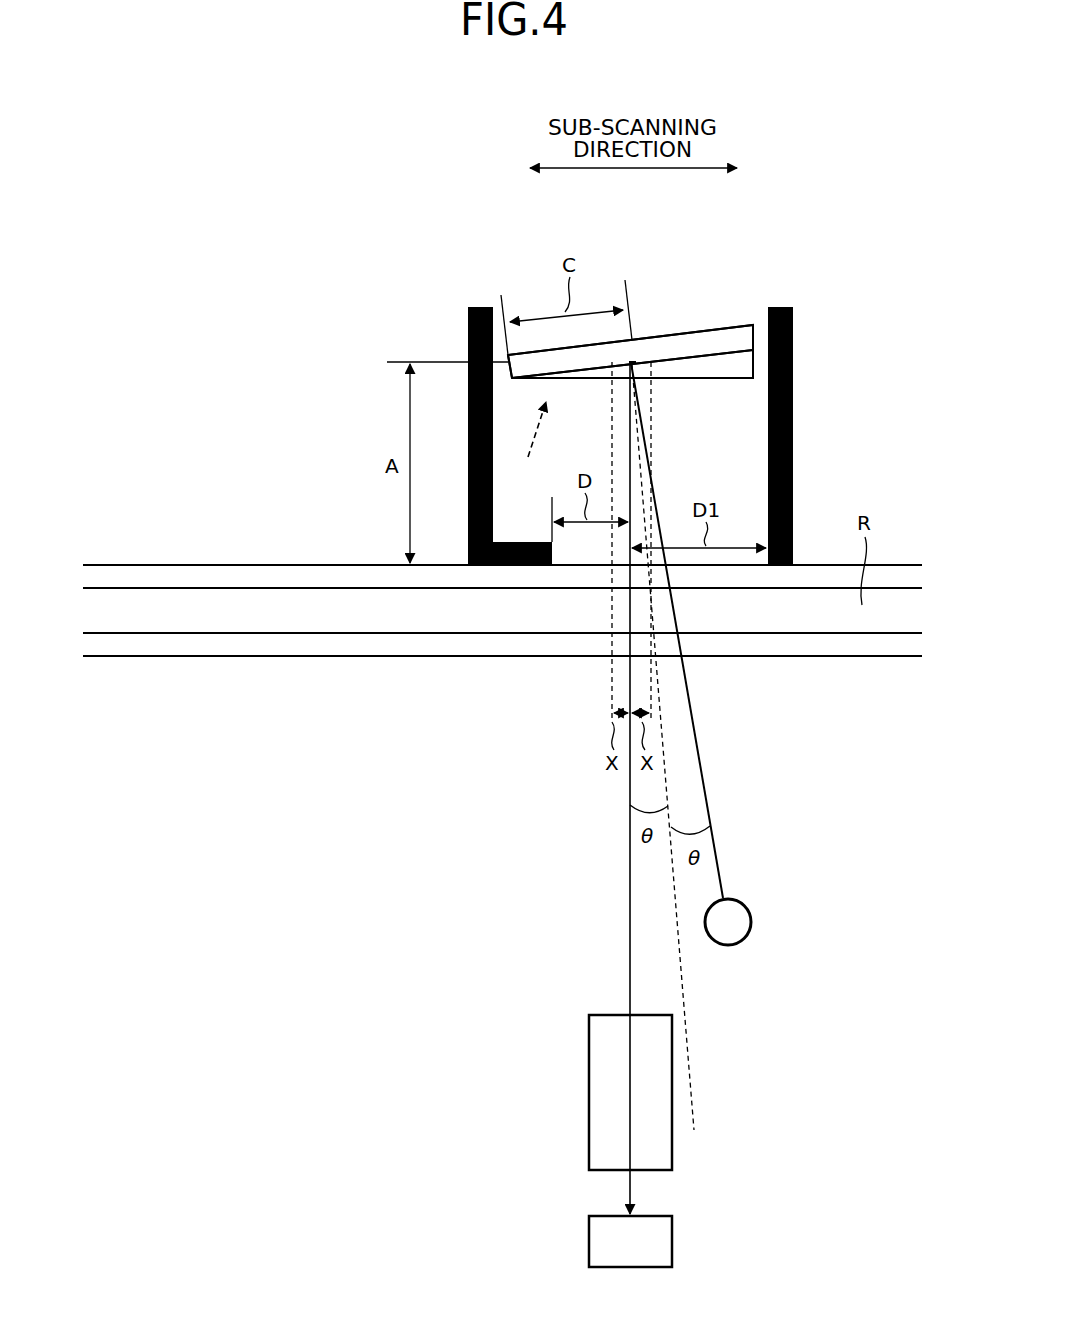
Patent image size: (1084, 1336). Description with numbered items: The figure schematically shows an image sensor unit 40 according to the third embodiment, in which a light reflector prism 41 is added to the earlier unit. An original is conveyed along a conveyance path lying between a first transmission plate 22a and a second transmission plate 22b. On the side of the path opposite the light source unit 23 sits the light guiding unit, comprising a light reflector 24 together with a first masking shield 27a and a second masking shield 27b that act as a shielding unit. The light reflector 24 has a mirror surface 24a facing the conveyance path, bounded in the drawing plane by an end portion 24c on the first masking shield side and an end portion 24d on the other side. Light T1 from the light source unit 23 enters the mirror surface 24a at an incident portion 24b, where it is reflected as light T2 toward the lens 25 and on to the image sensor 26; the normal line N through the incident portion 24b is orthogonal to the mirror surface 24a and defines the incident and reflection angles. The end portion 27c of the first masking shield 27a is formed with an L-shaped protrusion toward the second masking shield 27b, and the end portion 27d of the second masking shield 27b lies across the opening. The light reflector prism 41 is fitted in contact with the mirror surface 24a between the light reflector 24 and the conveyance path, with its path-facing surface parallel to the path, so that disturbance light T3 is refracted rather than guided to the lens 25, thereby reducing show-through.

The image sensor unit 40 is at (822, 126).
The first transmission plate 22a is at (243, 645).
The second transmission plate 22b is at (243, 576).
The first masking shield 27a is at (468, 316).
The second masking shield 27b is at (793, 316).
The end portion of the first masking shield 27c is at (507, 568).
The end portion of the second masking shield 27d is at (781, 567).
The light reflector 24 is at (688, 330).
The mirror surface 24a is at (755, 354).
The incident portion 24b is at (633, 366).
The end portion 24c is at (508, 359).
The end portion 24d is at (755, 338).
The light reflector prism 41 is at (755, 368).
The light source unit 23 is at (752, 922).
The lens 25 is at (589, 1097).
The image sensor 26 is at (589, 1247).
The light T1 is at (717, 848).
The light T2 is at (628, 880).
The disturbance light T3 is at (544, 430).
The normal line N is at (686, 999).